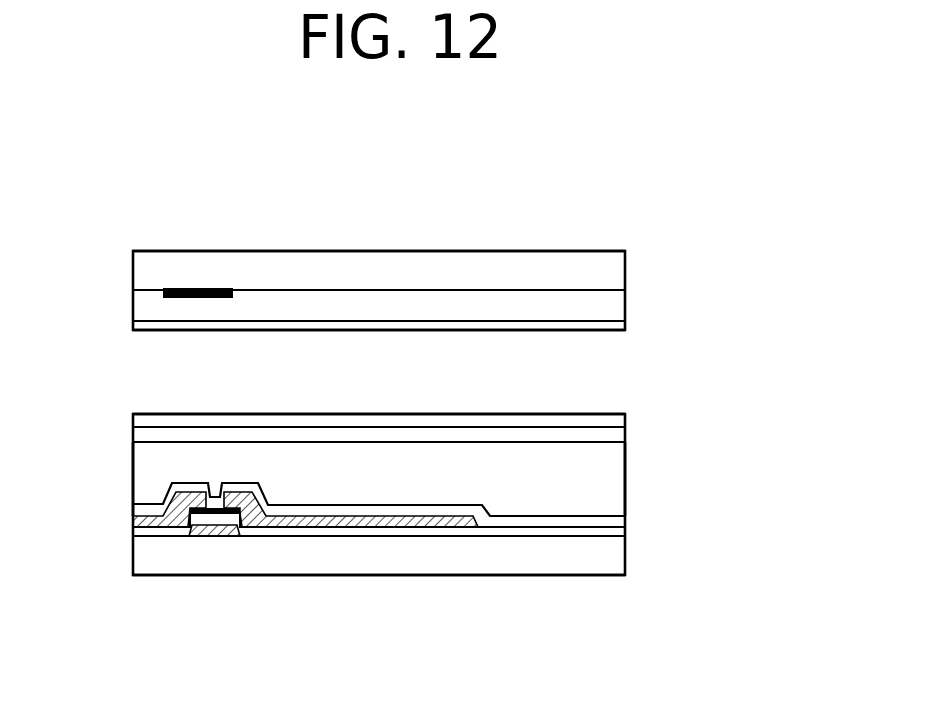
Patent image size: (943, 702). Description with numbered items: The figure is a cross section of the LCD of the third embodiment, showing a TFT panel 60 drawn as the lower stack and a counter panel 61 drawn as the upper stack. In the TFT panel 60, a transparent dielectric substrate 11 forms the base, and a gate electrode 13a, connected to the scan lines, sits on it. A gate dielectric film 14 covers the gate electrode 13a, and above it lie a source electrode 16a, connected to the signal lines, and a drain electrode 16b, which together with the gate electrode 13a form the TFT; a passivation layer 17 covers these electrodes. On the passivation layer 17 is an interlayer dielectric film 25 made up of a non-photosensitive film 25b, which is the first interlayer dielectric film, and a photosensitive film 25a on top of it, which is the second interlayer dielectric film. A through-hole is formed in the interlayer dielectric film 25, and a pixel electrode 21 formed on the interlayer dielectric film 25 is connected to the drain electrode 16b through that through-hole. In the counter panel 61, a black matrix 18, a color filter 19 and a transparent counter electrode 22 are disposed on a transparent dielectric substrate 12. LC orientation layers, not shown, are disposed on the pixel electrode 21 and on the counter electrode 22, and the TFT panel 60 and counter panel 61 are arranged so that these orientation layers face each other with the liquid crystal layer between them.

The transparent dielectric substrate 11 is at (576, 560).
The transparent dielectric substrate 12 is at (615, 269).
The gate electrode 13a is at (212, 536).
The gate dielectric film 14 is at (619, 533).
The source electrode 16a is at (130, 523).
The drain electrode 16b is at (352, 528).
The passivation layer 17 is at (618, 521).
The black matrix 18 is at (163, 297).
The color filter 19 is at (615, 302).
The pixel electrode 21 is at (615, 423).
The transparent counter electrode 22 is at (620, 326).
The interlayer dielectric film 25 is at (467, 477).
The photosensitive film 25a is at (615, 434).
The non-photosensitive film 25b is at (615, 488).
The TFT panel 60 is at (451, 523).
The counter panel 61 is at (416, 305).